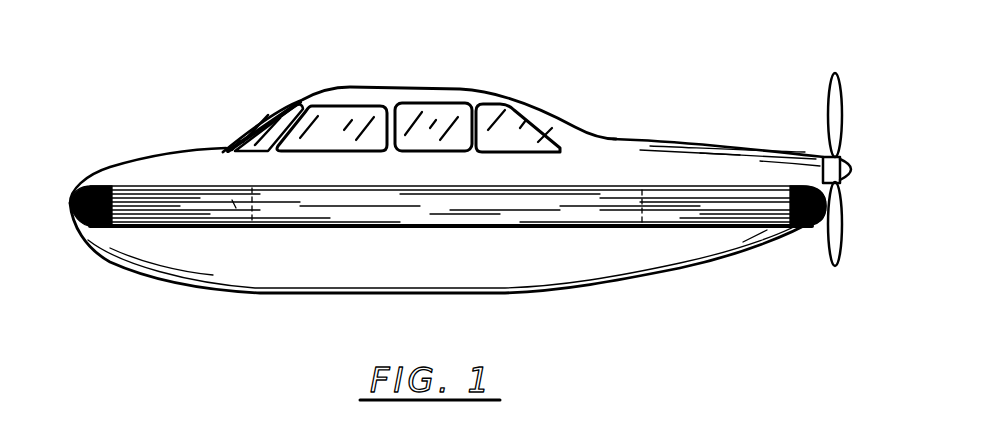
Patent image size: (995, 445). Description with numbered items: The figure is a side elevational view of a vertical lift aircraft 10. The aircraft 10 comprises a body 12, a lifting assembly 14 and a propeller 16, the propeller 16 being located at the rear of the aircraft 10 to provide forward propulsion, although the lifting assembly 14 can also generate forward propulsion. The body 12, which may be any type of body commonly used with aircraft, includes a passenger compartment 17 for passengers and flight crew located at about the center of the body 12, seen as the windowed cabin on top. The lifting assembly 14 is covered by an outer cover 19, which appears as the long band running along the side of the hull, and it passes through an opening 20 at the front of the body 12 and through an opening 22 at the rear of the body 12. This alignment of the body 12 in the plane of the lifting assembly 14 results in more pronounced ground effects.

The vertical lift aircraft 10 is at (460, 184).
The body 12 is at (620, 147).
The lifting assembly 14 is at (527, 228).
The propeller 16 is at (827, 93).
The passenger compartment 17 is at (412, 112).
The outer cover 19 is at (402, 228).
The opening 20 is at (248, 186).
The opening 22 is at (660, 197).